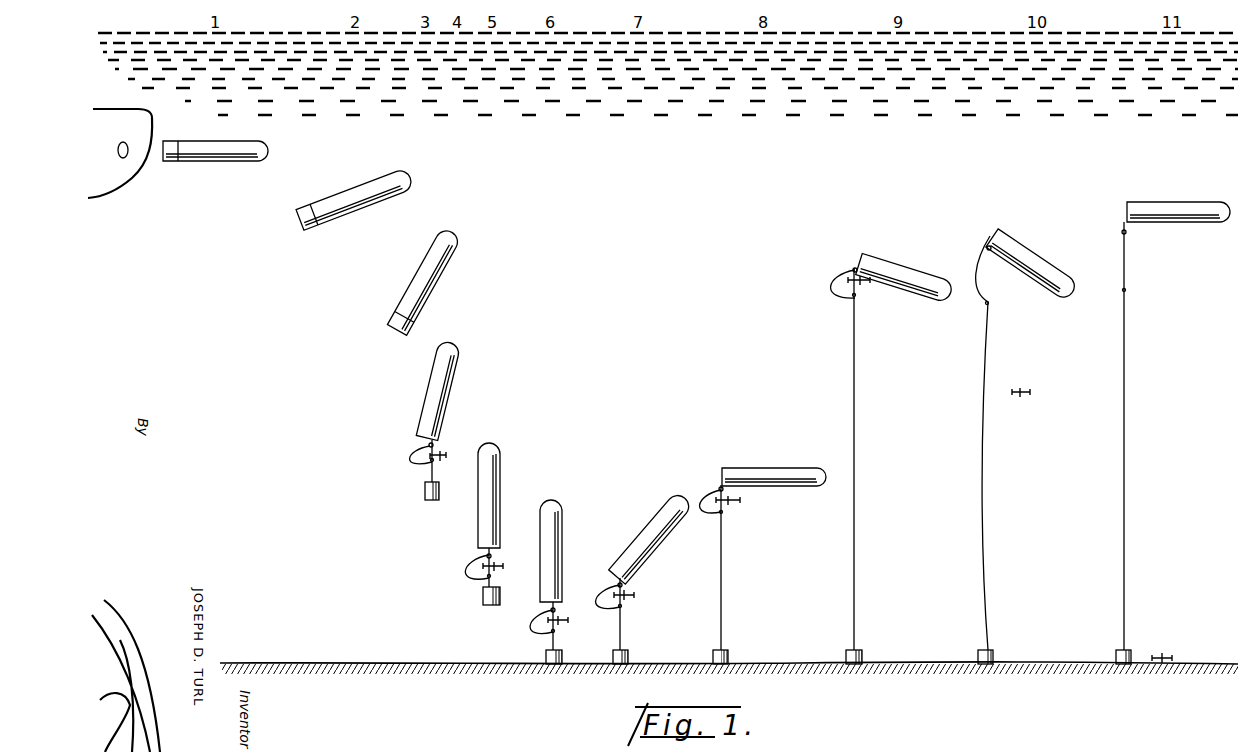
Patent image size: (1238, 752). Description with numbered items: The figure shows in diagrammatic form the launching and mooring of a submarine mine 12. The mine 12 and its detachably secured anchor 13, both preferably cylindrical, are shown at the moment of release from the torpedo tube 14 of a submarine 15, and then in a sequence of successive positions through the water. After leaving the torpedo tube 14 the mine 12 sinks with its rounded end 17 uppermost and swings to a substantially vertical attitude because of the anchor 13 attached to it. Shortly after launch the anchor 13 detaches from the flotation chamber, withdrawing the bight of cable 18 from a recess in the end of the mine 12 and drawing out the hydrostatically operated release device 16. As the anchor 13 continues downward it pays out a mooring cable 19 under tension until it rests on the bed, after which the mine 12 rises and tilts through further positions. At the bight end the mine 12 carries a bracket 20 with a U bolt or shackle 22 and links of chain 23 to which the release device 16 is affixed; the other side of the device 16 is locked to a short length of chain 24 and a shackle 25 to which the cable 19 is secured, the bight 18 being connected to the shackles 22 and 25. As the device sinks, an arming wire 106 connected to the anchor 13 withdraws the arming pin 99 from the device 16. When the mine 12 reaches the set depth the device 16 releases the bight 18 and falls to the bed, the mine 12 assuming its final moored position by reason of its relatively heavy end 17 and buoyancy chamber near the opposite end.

The submarine mine 12 is at (1191, 203).
The anchor 13 is at (1116, 653).
The torpedo tube 14 is at (138, 166).
The submarine 15 is at (145, 109).
The hydrostatically operated release device 16 is at (1164, 656).
The rounded end 17 is at (1230, 218).
The bight of cable 18 is at (1124, 268).
The mooring cable 19 is at (1125, 544).
The bracket 20 is at (1124, 218).
The U bolt or shackle 22 is at (626, 580).
The links of chain 23 is at (1125, 234).
The short length of chain 24 is at (1126, 290).
The U bolt or shackle 25 is at (988, 302).
The arming pin 99 is at (1131, 658).
The arming wire 106 is at (1120, 652).